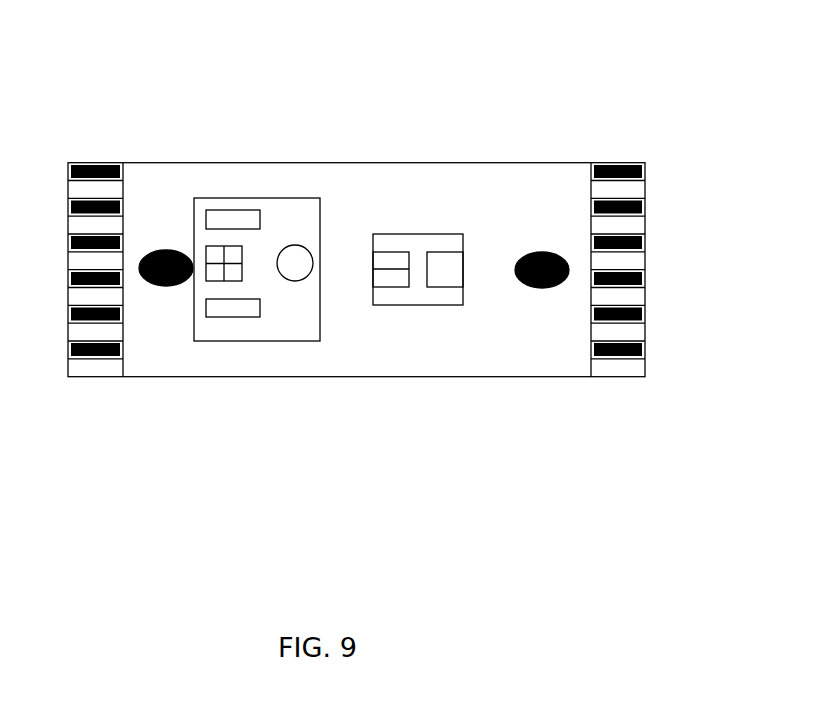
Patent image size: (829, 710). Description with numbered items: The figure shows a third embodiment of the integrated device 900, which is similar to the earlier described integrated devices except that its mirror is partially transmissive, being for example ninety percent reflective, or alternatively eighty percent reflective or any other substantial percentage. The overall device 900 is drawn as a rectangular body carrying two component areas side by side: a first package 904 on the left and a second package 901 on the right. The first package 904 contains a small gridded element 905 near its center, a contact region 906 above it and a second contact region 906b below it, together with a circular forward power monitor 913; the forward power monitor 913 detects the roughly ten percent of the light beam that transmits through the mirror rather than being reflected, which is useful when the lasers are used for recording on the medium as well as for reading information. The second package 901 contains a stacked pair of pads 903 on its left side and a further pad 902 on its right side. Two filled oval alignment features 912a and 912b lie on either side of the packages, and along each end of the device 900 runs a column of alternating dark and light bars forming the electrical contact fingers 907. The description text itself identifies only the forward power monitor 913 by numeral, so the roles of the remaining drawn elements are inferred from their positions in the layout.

The optical module / device 900 is at (554, 340).
The receiver chip package 901 is at (430, 232).
The photodetector 902 is at (445, 272).
The bond pads 903 is at (392, 288).
The transmitter chip package 904 is at (201, 338).
The light emitter array 905 is at (241, 263).
The contact pad 906 is at (280, 208).
The contact pad 906b is at (261, 318).
The electrical contact fingers 907 is at (85, 197).
The alignment feature 912a is at (158, 250).
The alignment feature 912b is at (555, 250).
The forward power monitor 913 is at (296, 283).